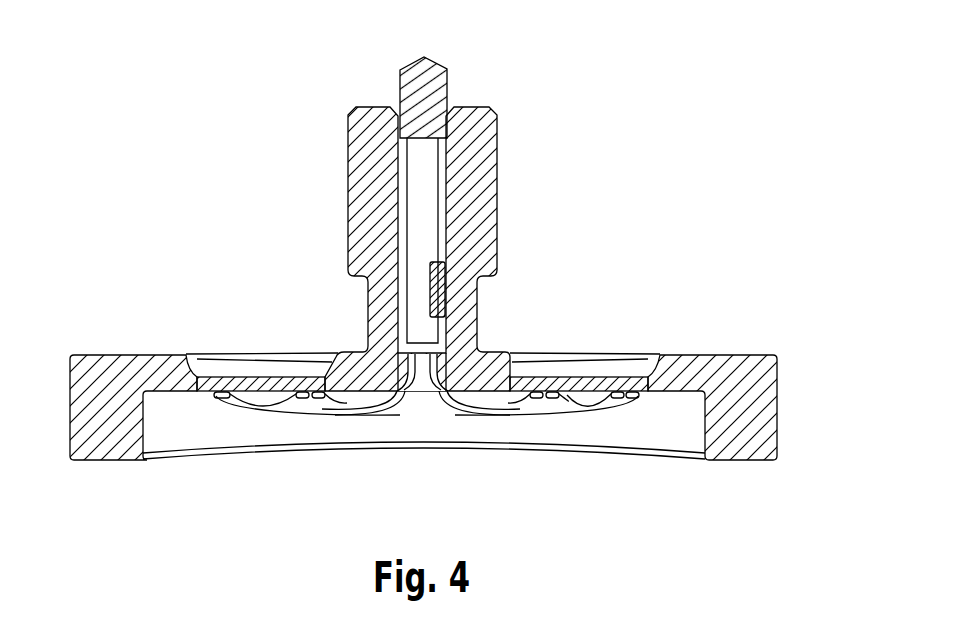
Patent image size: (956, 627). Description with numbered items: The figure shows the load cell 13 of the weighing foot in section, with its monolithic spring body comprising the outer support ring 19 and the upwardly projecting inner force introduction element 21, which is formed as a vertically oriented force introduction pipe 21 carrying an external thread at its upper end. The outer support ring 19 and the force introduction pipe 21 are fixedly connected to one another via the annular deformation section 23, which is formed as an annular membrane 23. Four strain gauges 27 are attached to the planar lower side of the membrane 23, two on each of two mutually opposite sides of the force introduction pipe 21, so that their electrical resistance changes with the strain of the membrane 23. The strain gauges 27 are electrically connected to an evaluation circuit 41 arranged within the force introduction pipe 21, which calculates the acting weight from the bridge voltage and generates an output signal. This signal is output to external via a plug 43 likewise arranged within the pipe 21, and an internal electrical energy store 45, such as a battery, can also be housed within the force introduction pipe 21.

The load cell 13 is at (747, 160).
The outer support ring 19 is at (80, 387).
The force introduction element 21 is at (368, 188).
The deformation section 23 is at (233, 383).
The strain gauges 27 is at (225, 421).
The evaluation circuit 41 is at (452, 347).
The plug 43 is at (440, 95).
The electrical energy store 45 is at (450, 280).